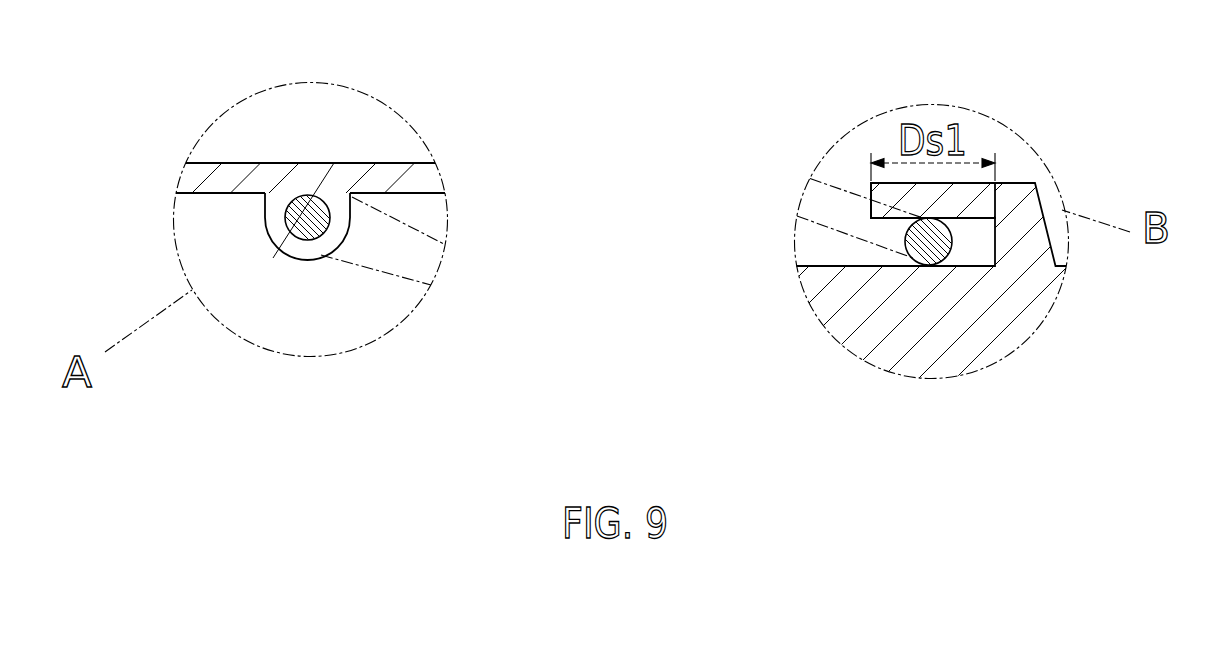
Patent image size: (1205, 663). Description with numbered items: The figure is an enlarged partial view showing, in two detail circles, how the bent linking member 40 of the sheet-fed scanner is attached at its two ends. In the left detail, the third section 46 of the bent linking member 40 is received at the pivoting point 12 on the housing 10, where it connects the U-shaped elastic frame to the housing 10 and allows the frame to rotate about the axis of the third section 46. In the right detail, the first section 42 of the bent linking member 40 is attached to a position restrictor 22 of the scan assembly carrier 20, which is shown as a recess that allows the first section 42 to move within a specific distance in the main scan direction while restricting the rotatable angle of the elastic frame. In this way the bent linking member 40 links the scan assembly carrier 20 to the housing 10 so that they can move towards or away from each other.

The housing 10 is at (250, 163).
The pivoting point 12 is at (283, 251).
The bent linking member 40 is at (390, 218).
The third section 46 is at (286, 222).
The scan assembly carrier 20 is at (845, 265).
The position restrictor 22 is at (1013, 183).
The first section 42 is at (940, 252).